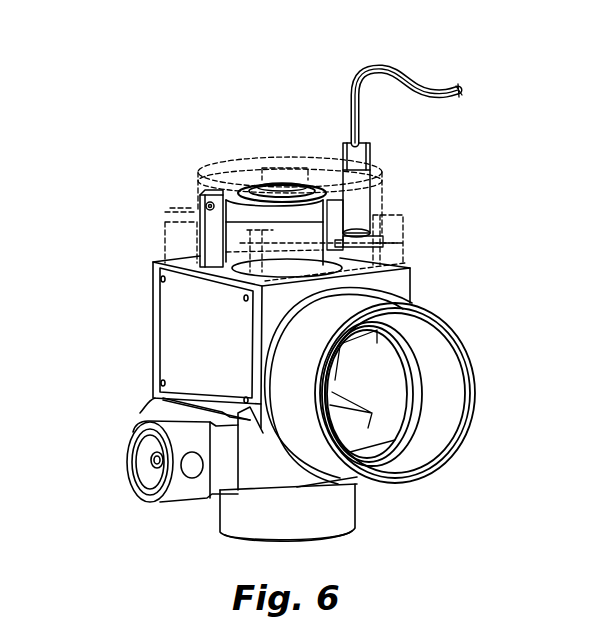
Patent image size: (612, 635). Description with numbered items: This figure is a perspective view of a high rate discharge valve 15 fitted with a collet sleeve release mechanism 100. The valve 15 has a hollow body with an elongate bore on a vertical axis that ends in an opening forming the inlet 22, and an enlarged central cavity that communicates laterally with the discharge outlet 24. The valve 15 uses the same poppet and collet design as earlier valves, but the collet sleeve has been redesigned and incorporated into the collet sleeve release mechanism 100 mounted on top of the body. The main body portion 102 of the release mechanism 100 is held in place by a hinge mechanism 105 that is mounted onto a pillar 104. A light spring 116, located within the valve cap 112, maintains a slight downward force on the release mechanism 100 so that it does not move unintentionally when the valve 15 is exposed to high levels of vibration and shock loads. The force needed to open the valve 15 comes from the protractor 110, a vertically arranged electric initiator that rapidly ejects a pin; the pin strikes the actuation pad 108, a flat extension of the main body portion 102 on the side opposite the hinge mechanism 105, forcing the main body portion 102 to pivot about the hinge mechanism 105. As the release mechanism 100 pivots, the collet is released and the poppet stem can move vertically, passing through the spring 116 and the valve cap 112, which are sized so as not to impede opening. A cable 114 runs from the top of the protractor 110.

The HRD valve 15 is at (112, 318).
The inlet 22 is at (318, 540).
The discharge outlet 24 is at (417, 448).
The collet sleeve release mechanism 100 is at (393, 168).
The main body portion 102 is at (237, 208).
The pillar 104 is at (238, 192).
The hinge mechanism 105 is at (205, 206).
The actuation pad 108 is at (342, 241).
The protractor 110 is at (358, 203).
The valve cap 112 is at (296, 155).
The cable 114 is at (398, 70).
The spring 116 is at (283, 185).